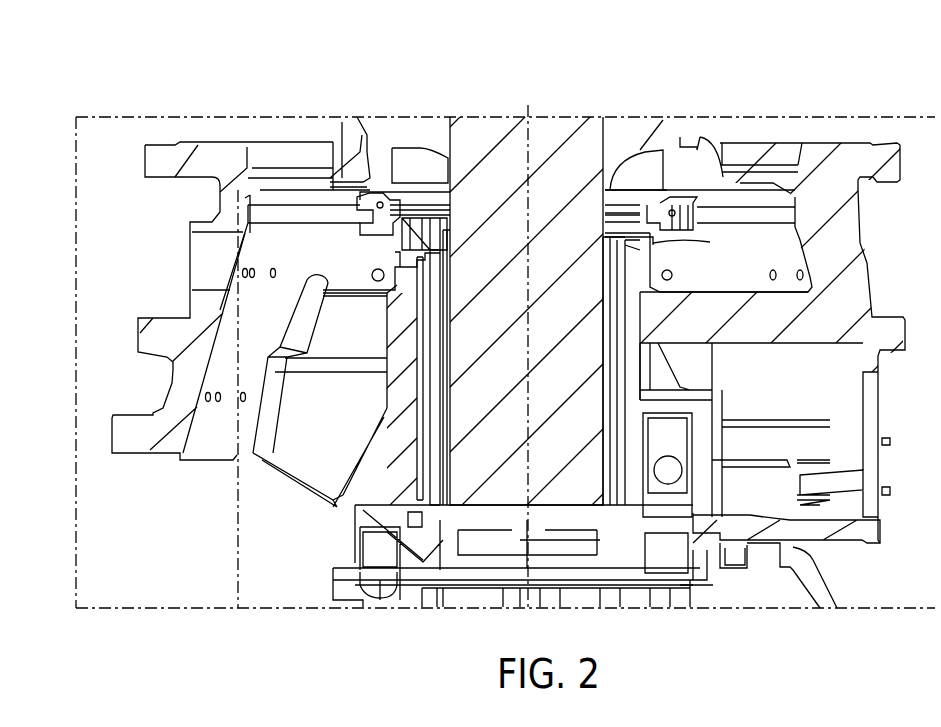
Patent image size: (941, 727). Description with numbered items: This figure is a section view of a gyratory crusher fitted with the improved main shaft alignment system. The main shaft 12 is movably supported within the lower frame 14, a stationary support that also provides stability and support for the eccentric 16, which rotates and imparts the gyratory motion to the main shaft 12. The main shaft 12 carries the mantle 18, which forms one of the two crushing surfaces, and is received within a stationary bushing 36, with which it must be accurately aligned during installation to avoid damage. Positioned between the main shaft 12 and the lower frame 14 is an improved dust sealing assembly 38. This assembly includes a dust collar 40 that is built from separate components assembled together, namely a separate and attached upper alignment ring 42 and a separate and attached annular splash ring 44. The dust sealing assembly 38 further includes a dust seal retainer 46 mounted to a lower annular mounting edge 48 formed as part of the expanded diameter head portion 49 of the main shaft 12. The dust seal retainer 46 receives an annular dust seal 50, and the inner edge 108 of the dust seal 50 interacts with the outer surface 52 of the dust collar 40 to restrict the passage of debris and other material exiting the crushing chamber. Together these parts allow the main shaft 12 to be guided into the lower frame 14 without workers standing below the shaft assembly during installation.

The main shaft 12 is at (552, 133).
The lower frame 14 is at (853, 287).
The eccentric 16 is at (430, 393).
The mantle 18 is at (702, 122).
The bushing 36 is at (448, 355).
The dust sealing assembly 38 is at (680, 253).
The dust collar 40 is at (398, 267).
The upper alignment ring 42 is at (398, 212).
The annular splash ring 44 is at (422, 214).
The dust seal retainer 46 is at (363, 197).
The lower annular mounting edge 48 is at (374, 205).
The expanded diameter head portion 49 is at (666, 125).
The annular dust seal 50 is at (662, 213).
The outer surface 52 is at (670, 243).
The inner edge 108 is at (661, 213).